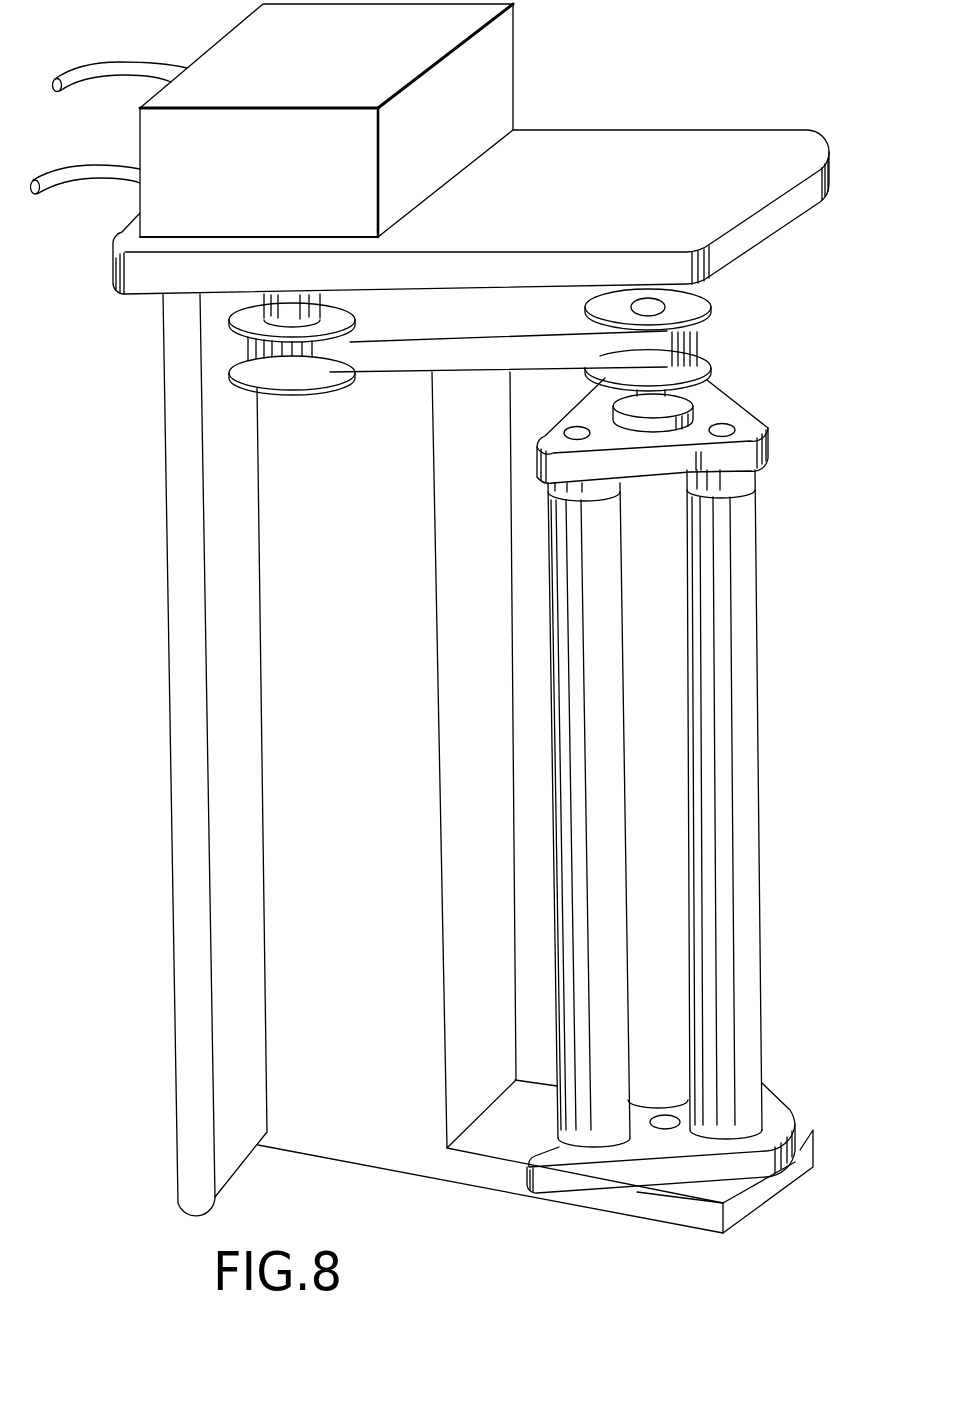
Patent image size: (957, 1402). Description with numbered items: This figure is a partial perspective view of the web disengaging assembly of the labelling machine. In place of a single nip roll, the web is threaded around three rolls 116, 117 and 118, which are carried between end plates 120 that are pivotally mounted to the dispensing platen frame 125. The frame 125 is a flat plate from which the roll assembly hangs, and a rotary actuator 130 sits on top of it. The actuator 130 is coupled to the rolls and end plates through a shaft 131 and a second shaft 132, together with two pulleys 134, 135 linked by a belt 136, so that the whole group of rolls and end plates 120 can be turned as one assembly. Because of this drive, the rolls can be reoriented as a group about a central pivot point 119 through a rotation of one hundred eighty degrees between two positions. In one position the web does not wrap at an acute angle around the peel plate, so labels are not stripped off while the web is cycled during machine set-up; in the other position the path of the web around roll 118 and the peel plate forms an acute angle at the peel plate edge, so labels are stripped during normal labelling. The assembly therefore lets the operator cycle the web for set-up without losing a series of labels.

The roll 116 is at (560, 1000).
The roll 117 is at (748, 997).
The roll 118 is at (660, 845).
The central pivot point 119 is at (657, 1129).
The end plate 120 is at (760, 450).
The dispensing platen frame 125 is at (640, 147).
The rotary actuator 130 is at (493, 80).
The shaft 131 is at (319, 291).
The shaft 132 is at (646, 398).
The pulley 134 is at (292, 393).
The pulley 135 is at (690, 307).
The belt 136 is at (388, 353).